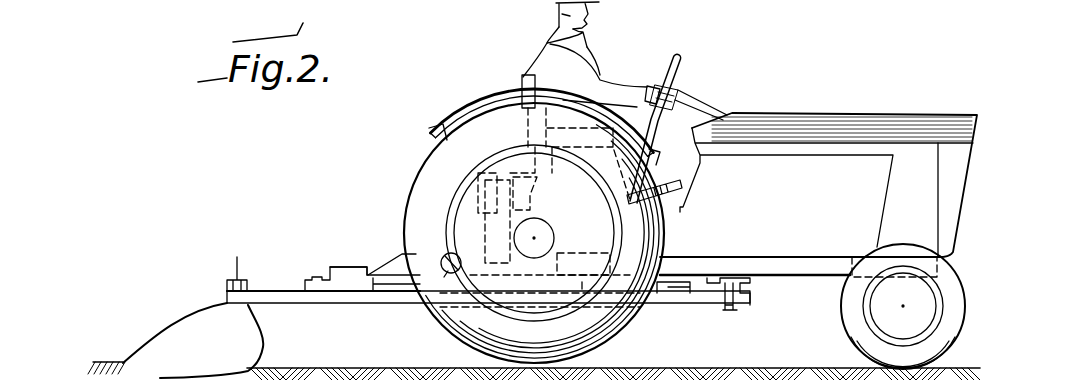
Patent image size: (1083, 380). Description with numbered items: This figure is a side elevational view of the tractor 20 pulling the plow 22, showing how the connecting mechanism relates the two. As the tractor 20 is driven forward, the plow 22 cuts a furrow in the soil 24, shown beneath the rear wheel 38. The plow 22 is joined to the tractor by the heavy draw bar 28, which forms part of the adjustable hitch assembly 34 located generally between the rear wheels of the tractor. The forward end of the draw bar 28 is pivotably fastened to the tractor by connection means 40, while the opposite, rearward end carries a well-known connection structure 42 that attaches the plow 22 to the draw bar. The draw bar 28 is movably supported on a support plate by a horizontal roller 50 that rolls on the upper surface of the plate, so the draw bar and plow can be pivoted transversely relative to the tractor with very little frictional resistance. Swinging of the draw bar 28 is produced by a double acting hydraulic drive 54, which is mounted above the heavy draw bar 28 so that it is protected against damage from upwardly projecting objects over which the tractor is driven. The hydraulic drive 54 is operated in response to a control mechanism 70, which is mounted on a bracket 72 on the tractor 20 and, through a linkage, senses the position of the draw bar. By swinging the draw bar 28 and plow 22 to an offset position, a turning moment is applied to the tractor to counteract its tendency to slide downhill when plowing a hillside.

The tractor 20 is at (858, 92).
The plow 22 is at (187, 332).
The soil 24 is at (360, 368).
The draw bar 28 is at (280, 291).
The hitch assembly 34 is at (334, 232).
The rear wheel 38 is at (620, 338).
The connection means 40 is at (745, 314).
The connection structure 42 is at (248, 246).
The horizontal roller 50 is at (352, 267).
The double acting hydraulic drive 54 is at (436, 253).
The control mechanism 70 is at (473, 188).
The bracket 72 is at (487, 163).